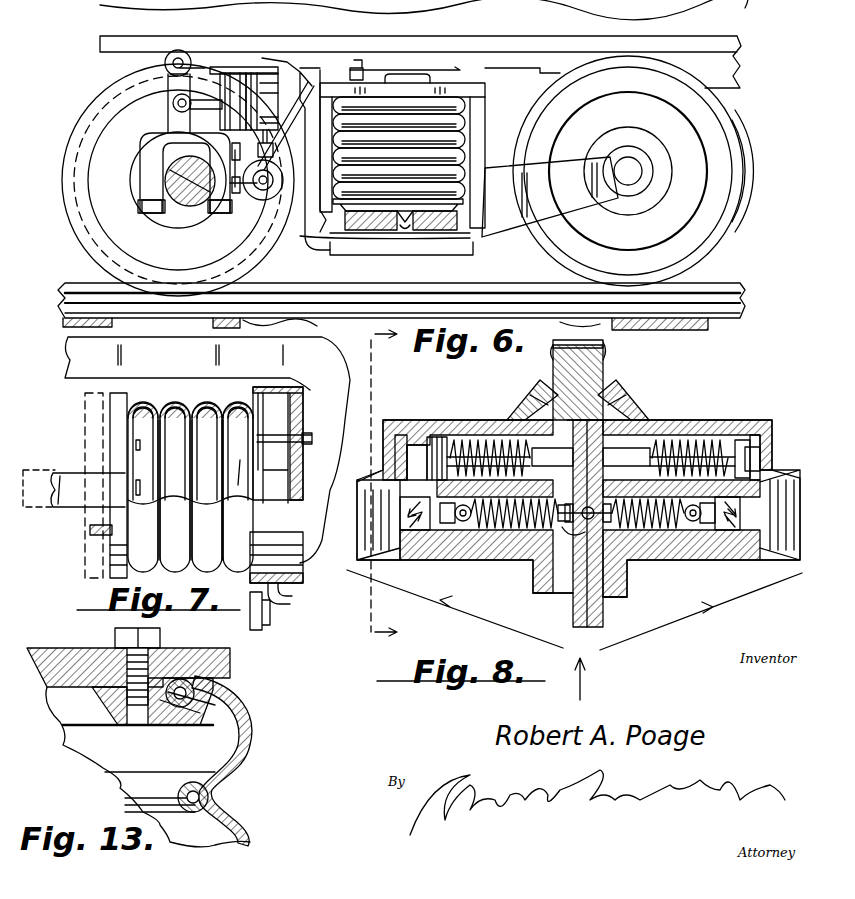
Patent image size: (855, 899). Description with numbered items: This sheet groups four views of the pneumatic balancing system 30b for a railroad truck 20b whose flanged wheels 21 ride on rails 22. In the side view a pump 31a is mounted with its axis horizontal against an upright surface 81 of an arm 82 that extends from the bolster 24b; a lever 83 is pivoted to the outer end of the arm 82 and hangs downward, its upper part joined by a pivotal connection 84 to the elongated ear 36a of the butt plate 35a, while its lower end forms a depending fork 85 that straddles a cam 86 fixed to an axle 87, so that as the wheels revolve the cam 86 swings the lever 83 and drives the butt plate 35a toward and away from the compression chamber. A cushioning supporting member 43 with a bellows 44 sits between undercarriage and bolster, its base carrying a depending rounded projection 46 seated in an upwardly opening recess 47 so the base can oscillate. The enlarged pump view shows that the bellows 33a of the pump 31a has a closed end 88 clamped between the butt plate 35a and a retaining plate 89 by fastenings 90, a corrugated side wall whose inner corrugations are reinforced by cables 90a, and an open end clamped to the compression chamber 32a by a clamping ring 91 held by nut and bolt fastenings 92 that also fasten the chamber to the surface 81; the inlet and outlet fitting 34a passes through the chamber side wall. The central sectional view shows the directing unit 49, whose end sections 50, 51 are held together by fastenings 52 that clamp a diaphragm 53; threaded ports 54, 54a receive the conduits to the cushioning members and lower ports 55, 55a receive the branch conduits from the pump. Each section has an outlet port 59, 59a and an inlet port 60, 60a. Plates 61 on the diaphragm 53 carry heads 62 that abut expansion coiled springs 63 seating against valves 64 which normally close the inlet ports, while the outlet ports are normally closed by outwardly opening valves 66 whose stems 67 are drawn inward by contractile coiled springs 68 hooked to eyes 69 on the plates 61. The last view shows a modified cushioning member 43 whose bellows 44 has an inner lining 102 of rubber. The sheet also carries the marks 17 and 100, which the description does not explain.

In FIG. 8, the section line 17 is at (361, 489).
In FIG. 6, the truck 20b is at (509, 250).
In FIG. 6, the flanged wheels 21 is at (84, 230).
In FIG. 6, the rails 22 is at (350, 298).
In FIG. 6, the bolster 24b is at (470, 90).
In FIG. 6, the pneumatic balancing system 30b is at (151, 82).
In FIG. 6, the pump 31a is at (250, 64).
In FIG. 7, the pump 31a is at (240, 392).
In FIG. 7, the compression chamber 32a is at (284, 390).
In FIG. 7, the bellows 33a is at (174, 408).
In FIG. 7, the inlet and outlet fitting 34a is at (282, 606).
In FIG. 6, the butt plate 35a is at (213, 100).
In FIG. 7, the butt plate 35a is at (105, 448).
In FIG. 6, the elongated ear 36a is at (205, 100).
In FIG. 7, the elongated ear 36a is at (70, 507).
In FIG. 6, the cushioning supporting member 43 is at (462, 133).
In FIG. 13, the cushioning supporting member 43 is at (246, 799).
In FIG. 13, the bellows 44 is at (245, 720).
In FIG. 6, the depending rounded projection 46 is at (403, 228).
In FIG. 6, the upwardly opening recess 47 is at (412, 228).
In FIG. 8, the directing unit 49 is at (642, 578).
In FIG. 8, the end section 50 is at (690, 410).
In FIG. 8, the end section 51 is at (476, 412).
In FIG. 8, the fastenings 52 is at (545, 600).
In FIG. 8, the diaphragm 53 is at (604, 370).
In FIG. 8, the internally threaded port 54 is at (642, 402).
In FIG. 8, the internally threaded port 54a is at (526, 386).
In FIG. 8, the lower internally threaded port 55 is at (775, 560).
In FIG. 8, the lower internally threaded port 55a is at (383, 560).
In FIG. 8, the outlet port 59 is at (696, 524).
In FIG. 8, the outlet port 59a is at (466, 524).
In FIG. 8, the inlet port 60 is at (742, 438).
In FIG. 8, the inlet port 60a is at (432, 436).
In FIG. 8, the plates 61 is at (572, 536).
In FIG. 8, the head 62 is at (591, 458).
In FIG. 8, the expansion coiled spring 63 is at (488, 438).
In FIG. 8, the valve 64 is at (396, 456).
In FIG. 8, the outwardly opening valve 66 is at (446, 546).
In FIG. 8, the stem 67 is at (421, 520).
In FIG. 8, the contractile coiled spring 68 is at (508, 532).
In FIG. 8, the eyes 69 is at (563, 497).
In FIG. 6, the upright surface 81 is at (282, 132).
In FIG. 6, the arm 82 is at (288, 80).
In FIG. 6, the lever 83 is at (172, 130).
In FIG. 6, the pivotal connection 84 is at (166, 98).
In FIG. 6, the depending fork 85 is at (165, 214).
In FIG. 6, the cam 86 is at (205, 215).
In FIG. 6, the axle 87 is at (190, 207).
In FIG. 7, the closed end 88 is at (110, 396).
In FIG. 7, the retaining plate 89 is at (145, 470).
In FIG. 7, the fastenings 90 is at (145, 492).
In FIG. 7, the cables 90a is at (206, 425).
In FIG. 7, the clamping ring 91 is at (252, 430).
In FIG. 7, the nut and bolt fastenings 92 is at (306, 434).
In FIG. 6, the fitting 100 is at (360, 72).
In FIG. 13, the inner lining 102 is at (230, 735).